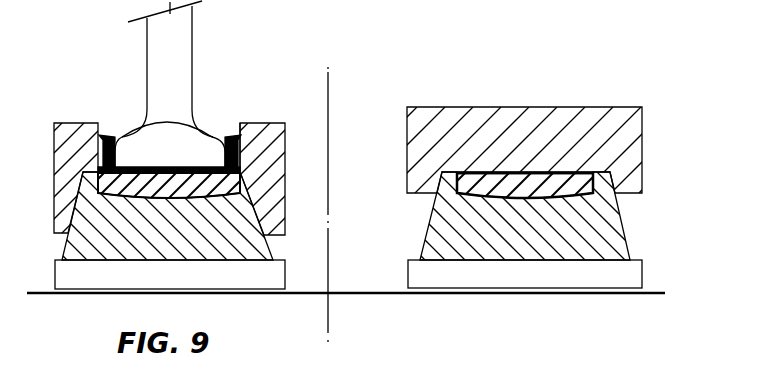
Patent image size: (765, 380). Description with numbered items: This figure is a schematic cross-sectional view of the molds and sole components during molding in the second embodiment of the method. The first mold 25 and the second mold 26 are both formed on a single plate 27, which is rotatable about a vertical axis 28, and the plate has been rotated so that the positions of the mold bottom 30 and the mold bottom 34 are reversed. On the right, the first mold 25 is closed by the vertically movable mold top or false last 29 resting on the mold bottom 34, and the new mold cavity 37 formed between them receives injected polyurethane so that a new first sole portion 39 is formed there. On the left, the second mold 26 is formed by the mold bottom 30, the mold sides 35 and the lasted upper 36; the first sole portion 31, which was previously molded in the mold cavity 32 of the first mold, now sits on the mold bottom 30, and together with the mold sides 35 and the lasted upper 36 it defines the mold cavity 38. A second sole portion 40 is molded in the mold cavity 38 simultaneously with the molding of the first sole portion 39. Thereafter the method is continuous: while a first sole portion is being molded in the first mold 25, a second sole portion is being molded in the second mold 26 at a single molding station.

The first mold 25 is at (528, 189).
The second mold 26 is at (190, 167).
The plate 27 is at (353, 291).
The vertical axis 28 is at (330, 150).
The false last 29 is at (637, 172).
The mold bottom 30 is at (240, 276).
The first sole portion 31 is at (250, 170).
The mold cavity 32 is at (100, 192).
The mold bottom 34 is at (560, 278).
The mold sides 35 is at (66, 195).
The lasted upper 36 is at (181, 85).
The mold cavity 37 is at (468, 193).
The mold cavity 38 is at (103, 136).
The first sole portion 39 is at (514, 183).
The second sole portion 40 is at (215, 135).